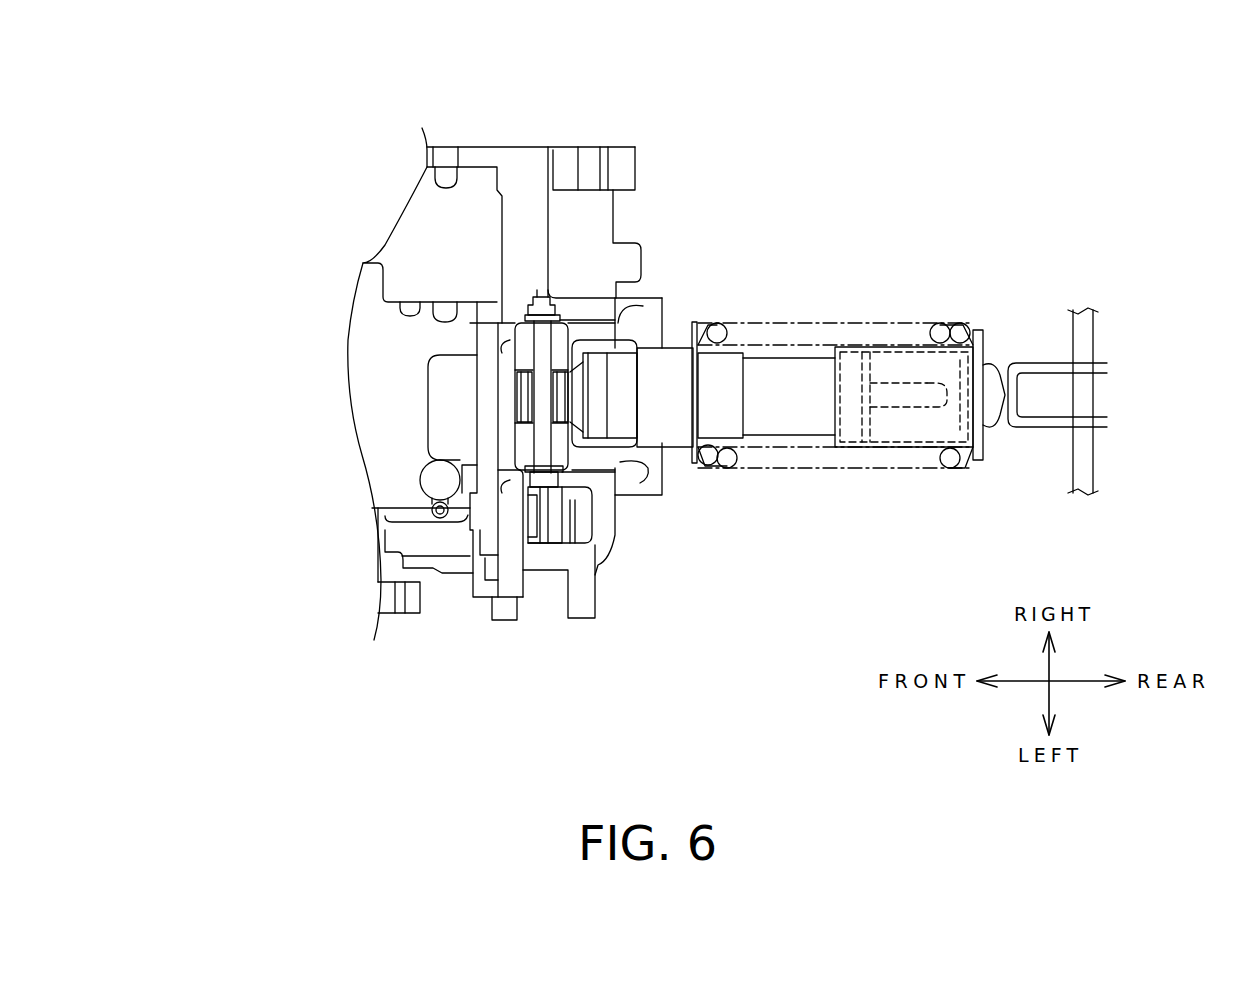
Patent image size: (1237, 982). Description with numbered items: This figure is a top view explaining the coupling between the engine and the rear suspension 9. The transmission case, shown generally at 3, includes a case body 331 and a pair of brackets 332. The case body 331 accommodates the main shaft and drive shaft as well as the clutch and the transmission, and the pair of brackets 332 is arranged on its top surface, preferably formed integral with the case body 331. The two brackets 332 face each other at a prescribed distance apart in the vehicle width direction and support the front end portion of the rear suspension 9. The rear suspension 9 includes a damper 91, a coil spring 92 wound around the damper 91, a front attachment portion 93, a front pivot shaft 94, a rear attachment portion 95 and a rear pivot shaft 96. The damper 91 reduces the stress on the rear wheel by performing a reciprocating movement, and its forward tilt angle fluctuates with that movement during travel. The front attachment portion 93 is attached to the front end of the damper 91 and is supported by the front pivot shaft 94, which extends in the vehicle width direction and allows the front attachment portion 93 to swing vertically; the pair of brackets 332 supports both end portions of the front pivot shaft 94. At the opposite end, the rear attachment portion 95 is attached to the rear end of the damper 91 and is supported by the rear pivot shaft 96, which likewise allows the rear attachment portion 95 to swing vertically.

The transmission case 3 is at (518, 138).
The case body 331 is at (387, 473).
The brackets 332 is at (665, 320).
The rear suspension 9 is at (1020, 292).
The damper 91 is at (677, 440).
The coil spring 92 is at (793, 465).
The front attachment portion 93 is at (515, 405).
The front pivot shaft 94 is at (542, 345).
The rear attachment portion 95 is at (1037, 427).
The rear pivot shaft 96 is at (1093, 465).